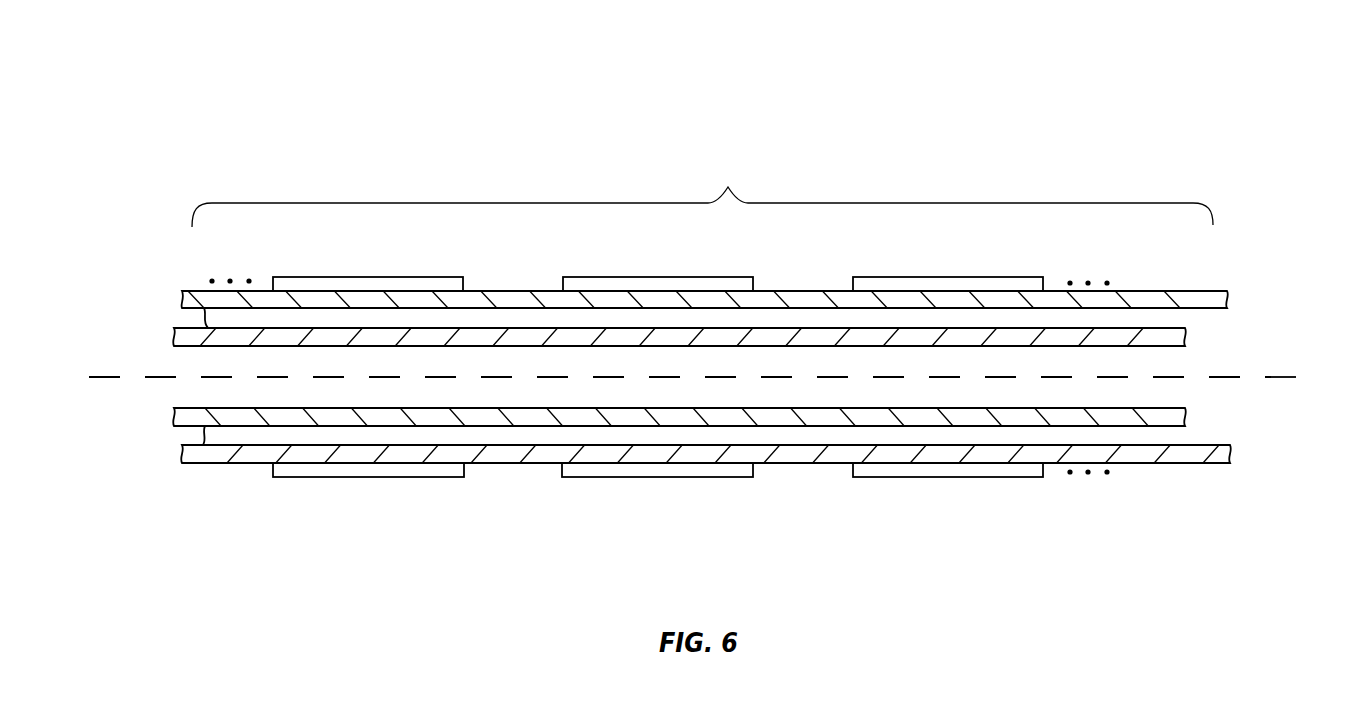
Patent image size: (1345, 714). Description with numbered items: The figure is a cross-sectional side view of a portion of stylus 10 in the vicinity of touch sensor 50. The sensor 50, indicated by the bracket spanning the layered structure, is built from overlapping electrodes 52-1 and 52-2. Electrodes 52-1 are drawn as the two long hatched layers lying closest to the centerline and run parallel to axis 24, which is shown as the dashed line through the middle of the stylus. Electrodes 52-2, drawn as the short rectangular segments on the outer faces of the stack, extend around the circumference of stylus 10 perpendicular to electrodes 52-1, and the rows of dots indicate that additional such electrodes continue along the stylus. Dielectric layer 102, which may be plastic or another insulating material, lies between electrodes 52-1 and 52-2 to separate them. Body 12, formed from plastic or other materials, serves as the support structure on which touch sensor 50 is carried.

The stylus 10 is at (1016, 99).
The body 12 is at (173, 337).
The axis 24 is at (107, 375).
The sensor 50 is at (702, 197).
The electrodes 52-1 is at (1182, 322).
The electrodes 52-2 is at (427, 275).
The dielectric layer 102 is at (1225, 298).